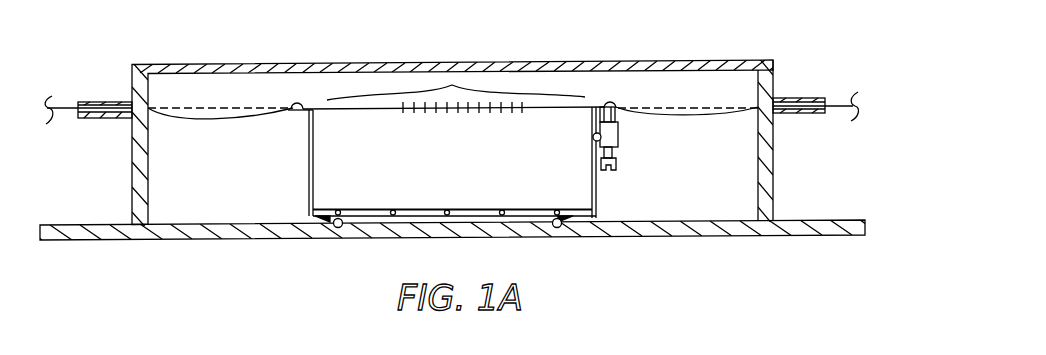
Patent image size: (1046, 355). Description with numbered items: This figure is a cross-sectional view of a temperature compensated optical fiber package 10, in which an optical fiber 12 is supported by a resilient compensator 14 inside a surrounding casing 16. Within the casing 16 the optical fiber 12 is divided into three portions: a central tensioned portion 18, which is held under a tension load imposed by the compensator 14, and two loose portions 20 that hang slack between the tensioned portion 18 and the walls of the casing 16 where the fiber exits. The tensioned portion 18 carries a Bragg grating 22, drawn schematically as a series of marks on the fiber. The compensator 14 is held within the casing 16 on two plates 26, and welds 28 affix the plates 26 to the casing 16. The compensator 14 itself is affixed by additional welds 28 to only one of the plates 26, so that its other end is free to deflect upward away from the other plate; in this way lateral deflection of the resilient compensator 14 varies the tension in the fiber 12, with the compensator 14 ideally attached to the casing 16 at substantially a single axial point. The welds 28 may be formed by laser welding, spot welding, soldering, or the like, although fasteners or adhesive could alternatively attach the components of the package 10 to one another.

The temperature compensated optical fiber package 10 is at (722, 18).
The optical fiber 12 is at (453, 126).
The compensator 14 is at (440, 160).
The casing 16 is at (451, 148).
The tensioned portion 18 is at (456, 61).
The loose portions 20 is at (453, 134).
The Bragg grating 22 is at (462, 123).
The plates 26 is at (482, 205).
The welds 28 is at (450, 192).